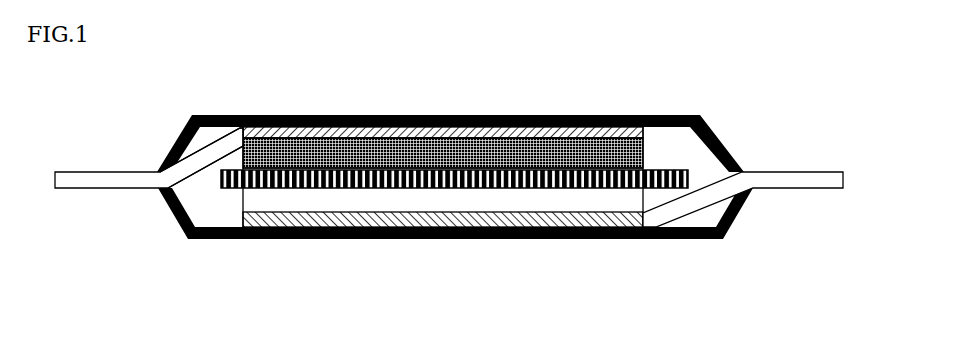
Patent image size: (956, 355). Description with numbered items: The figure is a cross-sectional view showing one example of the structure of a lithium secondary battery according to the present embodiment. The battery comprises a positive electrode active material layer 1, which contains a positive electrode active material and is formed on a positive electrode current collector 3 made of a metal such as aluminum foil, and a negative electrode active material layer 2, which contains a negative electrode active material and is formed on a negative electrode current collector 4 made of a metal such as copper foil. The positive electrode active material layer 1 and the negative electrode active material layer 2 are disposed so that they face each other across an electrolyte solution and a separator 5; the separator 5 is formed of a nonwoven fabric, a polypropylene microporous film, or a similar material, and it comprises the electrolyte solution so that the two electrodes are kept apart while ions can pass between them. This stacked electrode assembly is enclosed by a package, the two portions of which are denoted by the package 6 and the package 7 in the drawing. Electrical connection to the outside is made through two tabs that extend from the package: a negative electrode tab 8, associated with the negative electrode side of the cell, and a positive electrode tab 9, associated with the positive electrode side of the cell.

The positive electrode active material layer 1 is at (443, 209).
The negative electrode active material layer 2 is at (443, 122).
The positive electrode current collector 3 is at (443, 266).
The negative electrode current collector 4 is at (443, 101).
The separator 5 is at (454, 249).
The package 6 is at (455, 222).
The package 7 is at (216, 126).
The negative electrode tab 8 is at (149, 213).
The positive electrode tab 9 is at (743, 248).